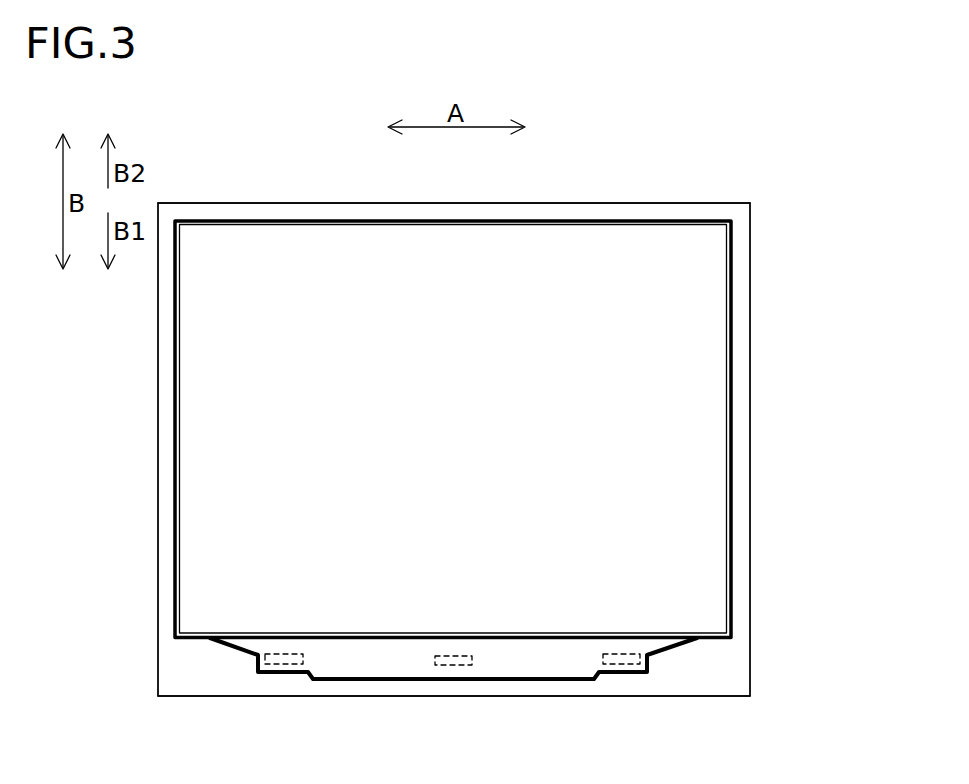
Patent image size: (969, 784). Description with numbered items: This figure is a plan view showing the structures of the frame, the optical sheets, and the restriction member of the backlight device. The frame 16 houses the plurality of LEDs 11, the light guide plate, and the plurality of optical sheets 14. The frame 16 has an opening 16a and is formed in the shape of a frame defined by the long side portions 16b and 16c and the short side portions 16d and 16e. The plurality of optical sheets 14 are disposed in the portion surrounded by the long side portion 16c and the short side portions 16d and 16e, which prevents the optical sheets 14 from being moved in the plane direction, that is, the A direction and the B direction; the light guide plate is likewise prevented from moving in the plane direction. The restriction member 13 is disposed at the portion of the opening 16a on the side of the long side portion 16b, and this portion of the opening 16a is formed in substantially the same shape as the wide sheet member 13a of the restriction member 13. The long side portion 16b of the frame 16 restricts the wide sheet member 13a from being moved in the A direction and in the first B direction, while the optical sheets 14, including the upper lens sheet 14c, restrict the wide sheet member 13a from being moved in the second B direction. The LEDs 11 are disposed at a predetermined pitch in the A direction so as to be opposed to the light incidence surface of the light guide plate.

The frame 16 is at (741, 220).
The opening 16a is at (722, 483).
The long side portion 16b is at (372, 688).
The long side portion 16c is at (450, 213).
The short side portion 16d is at (740, 405).
The short side portion 16e is at (167, 430).
The optical sheets 14 is at (527, 429).
The upper lens sheet 14c is at (704, 307).
The restriction member 13 is at (453, 694).
The wide sheet member 13a is at (531, 660).
The LEDs 11 is at (284, 664).